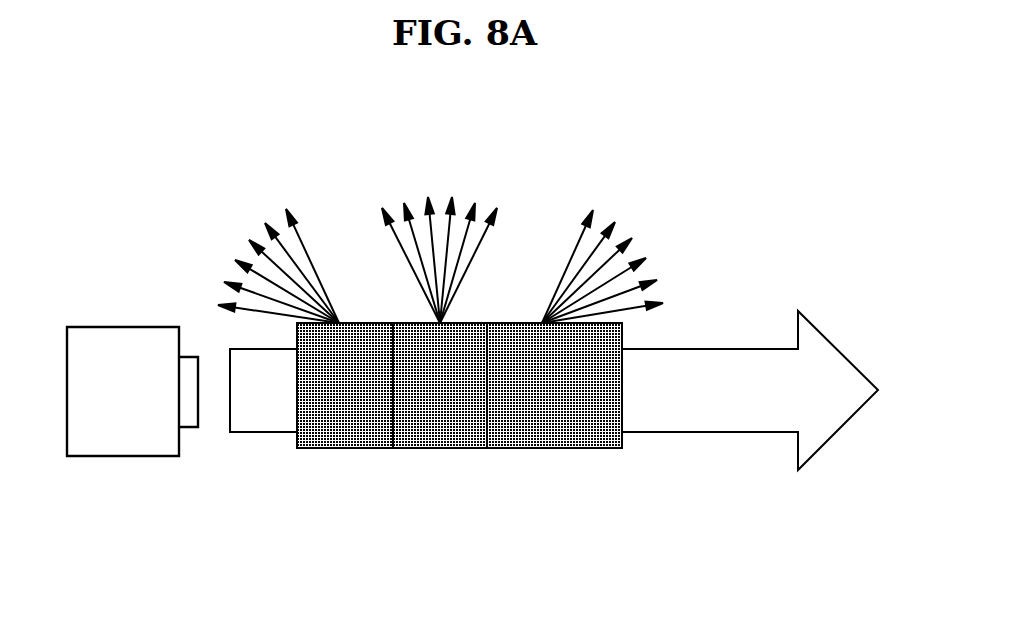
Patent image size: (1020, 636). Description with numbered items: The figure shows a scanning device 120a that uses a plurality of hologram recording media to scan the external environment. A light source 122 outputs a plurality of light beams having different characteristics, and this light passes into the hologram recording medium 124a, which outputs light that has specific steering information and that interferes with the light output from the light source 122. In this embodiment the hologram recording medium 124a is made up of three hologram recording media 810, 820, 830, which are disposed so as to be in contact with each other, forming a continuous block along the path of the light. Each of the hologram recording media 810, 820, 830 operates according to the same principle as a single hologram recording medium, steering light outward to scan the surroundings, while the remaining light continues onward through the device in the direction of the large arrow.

The scanning device 120a is at (467, 146).
The light source 122 is at (117, 448).
The hologram recording medium 124a is at (459, 446).
The hologram recording medium 810 is at (346, 437).
The hologram recording medium 820 is at (442, 437).
The hologram recording medium 830 is at (554, 415).